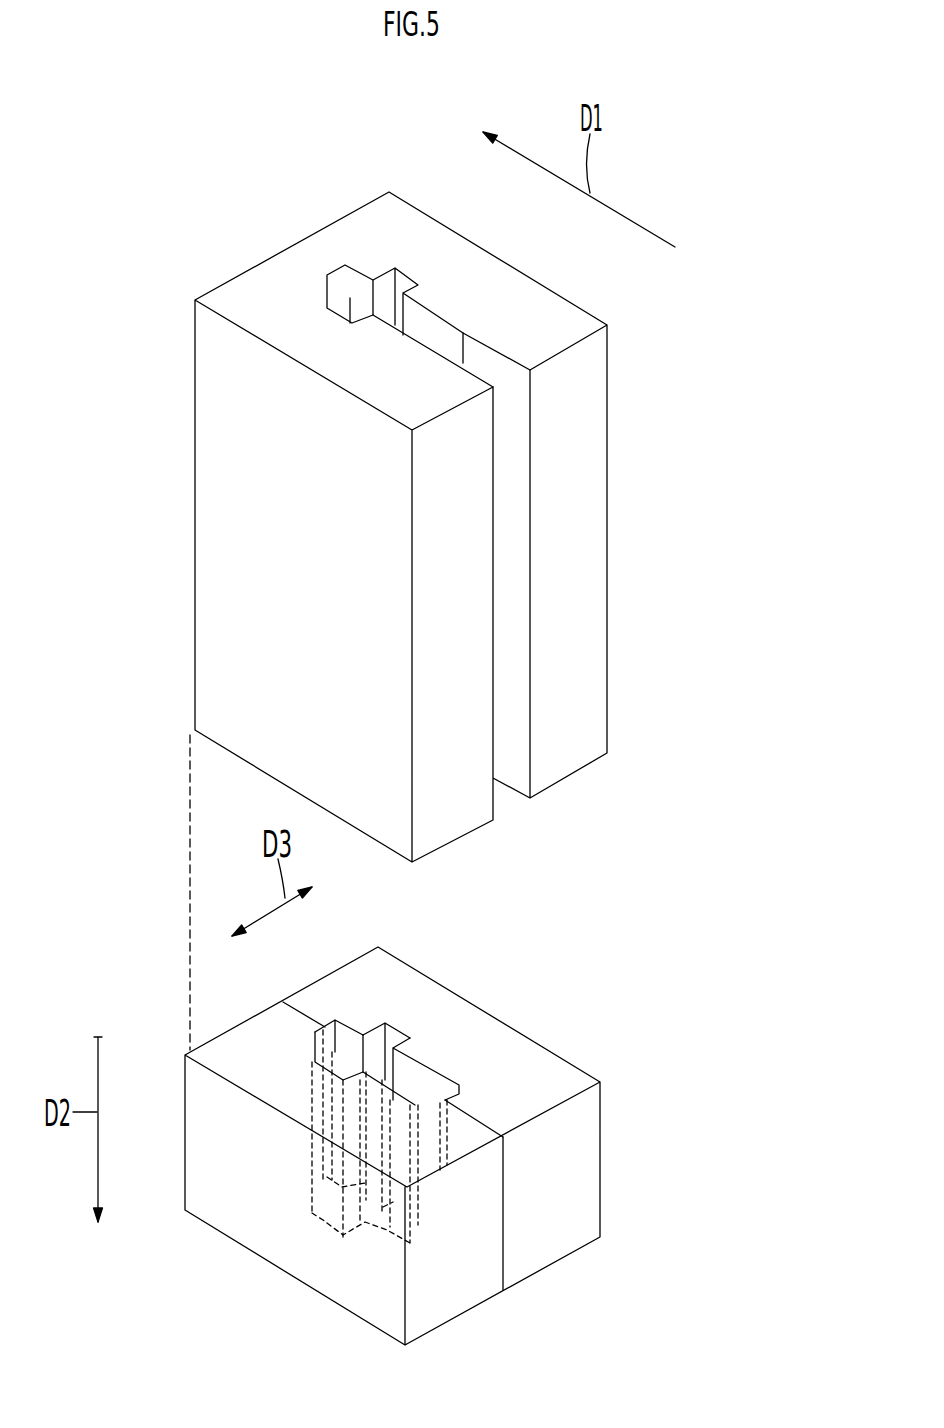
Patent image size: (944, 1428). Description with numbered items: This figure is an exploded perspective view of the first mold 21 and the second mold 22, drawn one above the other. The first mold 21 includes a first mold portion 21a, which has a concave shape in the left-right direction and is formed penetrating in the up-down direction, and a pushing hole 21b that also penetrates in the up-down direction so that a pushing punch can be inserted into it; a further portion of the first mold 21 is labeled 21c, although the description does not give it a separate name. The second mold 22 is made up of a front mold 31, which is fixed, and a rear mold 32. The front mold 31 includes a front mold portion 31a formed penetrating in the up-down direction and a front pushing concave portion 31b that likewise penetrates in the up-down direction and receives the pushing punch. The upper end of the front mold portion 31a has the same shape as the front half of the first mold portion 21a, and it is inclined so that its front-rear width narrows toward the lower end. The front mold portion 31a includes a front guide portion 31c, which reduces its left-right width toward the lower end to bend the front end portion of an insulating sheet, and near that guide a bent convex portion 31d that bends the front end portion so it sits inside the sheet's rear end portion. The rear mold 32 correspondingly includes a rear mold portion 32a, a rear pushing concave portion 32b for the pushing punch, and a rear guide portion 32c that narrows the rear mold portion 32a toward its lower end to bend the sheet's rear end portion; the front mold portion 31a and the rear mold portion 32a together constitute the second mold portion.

The first mold 21 is at (577, 318).
The first mold portion 21a is at (430, 308).
The pushing hole 21b is at (343, 305).
The slot of first block 21c is at (432, 352).
The second mold 22 is at (555, 1035).
The front mold 31 is at (212, 1046).
The front mold portion 31a is at (315, 1031).
The front pushing concave portion 31b is at (334, 1060).
The front guide portion 31c is at (450, 1105).
The bent convex portion 31d is at (425, 1092).
The rear mold 32 is at (522, 1050).
The rear mold portion 32a is at (347, 1020).
The rear pushing concave portion 32b is at (412, 1035).
The rear guide portion 32c is at (450, 1098).